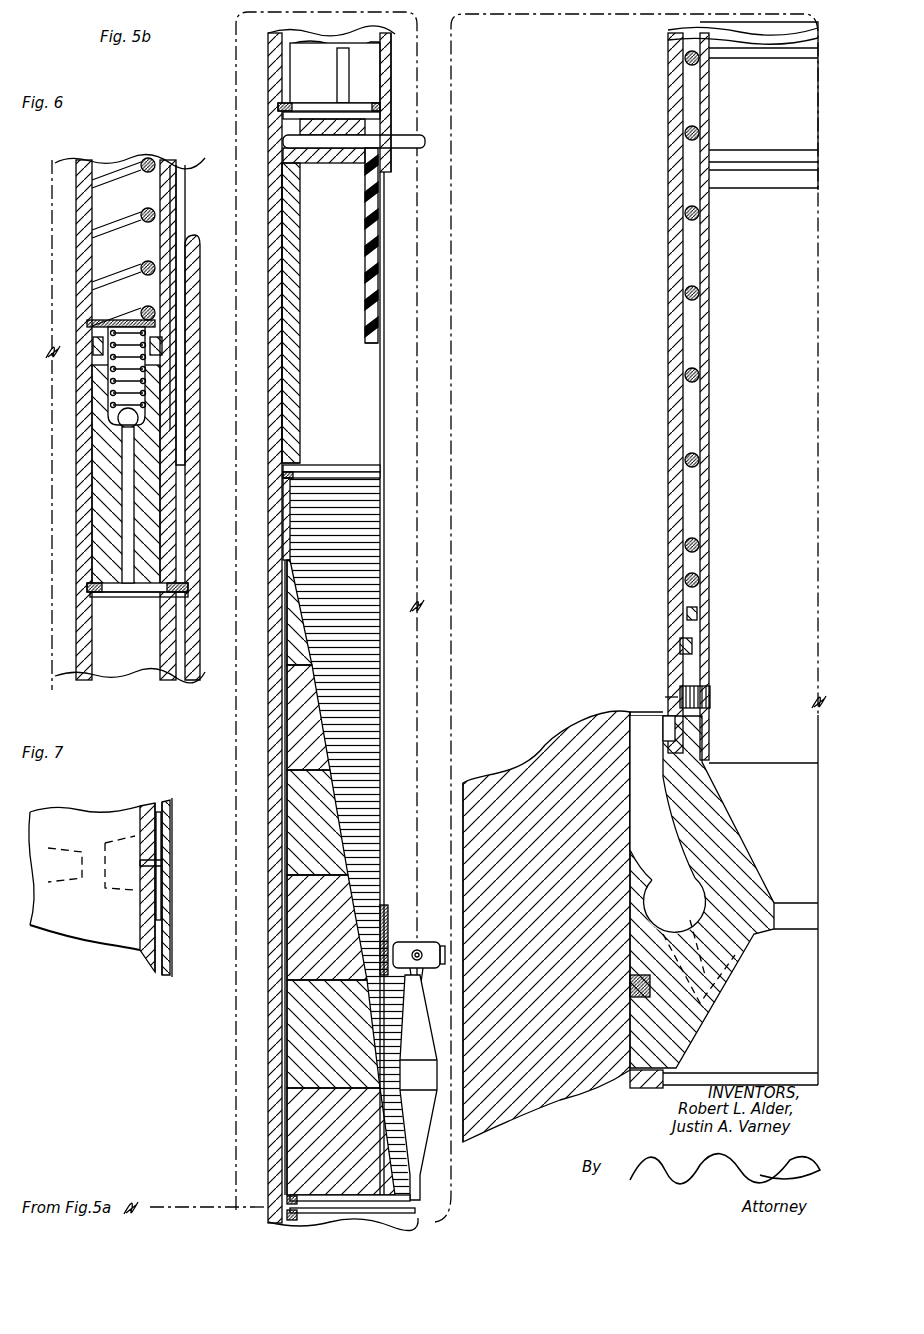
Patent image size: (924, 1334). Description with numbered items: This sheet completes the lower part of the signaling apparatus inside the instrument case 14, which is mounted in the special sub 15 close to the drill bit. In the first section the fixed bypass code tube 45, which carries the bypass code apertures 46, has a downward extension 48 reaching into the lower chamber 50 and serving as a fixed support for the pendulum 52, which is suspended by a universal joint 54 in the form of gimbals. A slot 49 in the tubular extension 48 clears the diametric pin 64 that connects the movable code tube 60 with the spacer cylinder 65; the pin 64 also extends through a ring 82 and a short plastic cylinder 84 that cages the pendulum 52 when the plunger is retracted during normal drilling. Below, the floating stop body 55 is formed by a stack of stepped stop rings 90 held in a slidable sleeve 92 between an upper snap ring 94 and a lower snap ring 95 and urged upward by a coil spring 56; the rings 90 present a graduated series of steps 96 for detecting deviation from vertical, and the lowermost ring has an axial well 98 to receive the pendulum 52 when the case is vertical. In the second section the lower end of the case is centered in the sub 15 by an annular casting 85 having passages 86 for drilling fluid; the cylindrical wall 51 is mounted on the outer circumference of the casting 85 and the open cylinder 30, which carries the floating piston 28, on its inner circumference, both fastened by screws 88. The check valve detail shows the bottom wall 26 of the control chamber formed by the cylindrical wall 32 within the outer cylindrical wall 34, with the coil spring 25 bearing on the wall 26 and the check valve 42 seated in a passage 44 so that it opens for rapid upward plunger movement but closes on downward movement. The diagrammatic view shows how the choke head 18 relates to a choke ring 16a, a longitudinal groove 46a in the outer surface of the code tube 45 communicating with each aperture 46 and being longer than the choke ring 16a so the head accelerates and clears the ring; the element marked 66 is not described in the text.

In FIG. 5B, the instrument case 14 is at (268, 447).
In FIG. 5B, the special sub 15 is at (558, 1105).
In FIG. 7, the choke ring 16a is at (58, 848).
In FIG. 7, the choke head 18 is at (100, 880).
In FIG. 6, the coil spring 25 is at (146, 207).
In FIG. 6, the bottom wall 26 is at (100, 470).
In FIG. 5B, the bottom wall 26 is at (313, 77).
In FIG. 5B, the floating piston 28 is at (779, 116).
In FIG. 5B, the open cylinder 30 is at (680, 373).
In FIG. 6, the cylindrical wall 32 is at (168, 199).
In FIG. 6, the outer cylindrical wall 34 is at (180, 231).
In FIG. 6, the check valve 42 is at (108, 405).
In FIG. 6, the passage 44 is at (128, 515).
In FIG. 6, the fixed code tube 45 is at (88, 265).
In FIG. 7, the fixed code tube 45 is at (166, 961).
In FIG. 5B, the fixed code tube 45 is at (404, 102).
In FIG. 7, the code apertures 46 is at (160, 866).
In FIG. 7, the longitudinal groove 46a is at (160, 886).
In FIG. 5B, the downward extension 48 is at (395, 195).
In FIG. 5B, the slot 49 is at (380, 232).
In FIG. 5B, the lower chamber 50 is at (325, 230).
In FIG. 6, the cylindrical wall 51 is at (190, 441).
In FIG. 5B, the cylindrical wall 51 is at (273, 596).
In FIG. 5B, the pendulum 52 is at (422, 1125).
In FIG. 5B, the universal joint 54 is at (402, 941).
In FIG. 5B, the floating stop body 55 is at (284, 905).
In FIG. 5B, the coil spring 56 is at (287, 1214).
In FIG. 6, the movable code tube 60 is at (78, 262).
In FIG. 7, the movable code tube 60 is at (165, 921).
In FIG. 5B, the movable code tube 60 is at (392, 90).
In FIG. 5B, the diametric pin 64 is at (426, 134).
In FIG. 5B, the spacer cylinder 65 is at (292, 419).
In FIG. 7, the plate 66 is at (140, 935).
In FIG. 5B, the ring 82 is at (327, 160).
In FIG. 5B, the short plastic cylinder 84 is at (373, 313).
In FIG. 5B, the annular casting 85 is at (700, 868).
In FIG. 5B, the passages 86 is at (690, 991).
In FIG. 5B, the screws 88 is at (711, 696).
In FIG. 5B, the stop rings 90 is at (296, 641).
In FIG. 5B, the slidable sleeve 92 is at (287, 541).
In FIG. 5B, the upper snap ring 94 is at (294, 481).
In FIG. 5B, the lower snap ring 95 is at (296, 1195).
In FIG. 5B, the steps 96 is at (330, 771).
In FIG. 5B, the axial well 98 is at (421, 1197).